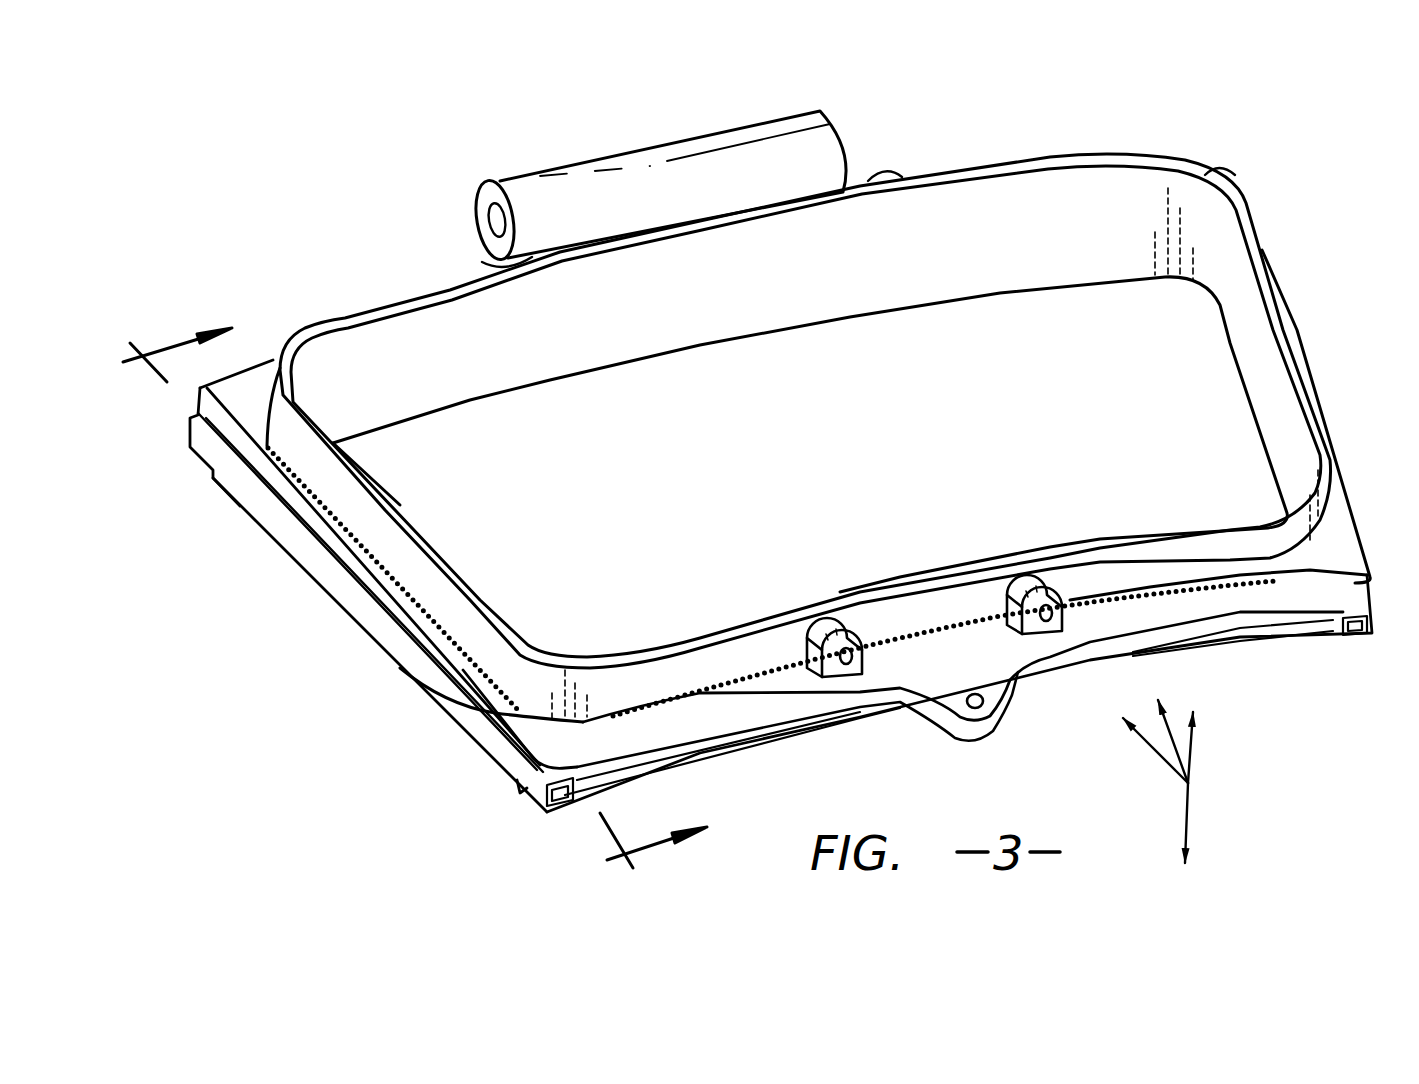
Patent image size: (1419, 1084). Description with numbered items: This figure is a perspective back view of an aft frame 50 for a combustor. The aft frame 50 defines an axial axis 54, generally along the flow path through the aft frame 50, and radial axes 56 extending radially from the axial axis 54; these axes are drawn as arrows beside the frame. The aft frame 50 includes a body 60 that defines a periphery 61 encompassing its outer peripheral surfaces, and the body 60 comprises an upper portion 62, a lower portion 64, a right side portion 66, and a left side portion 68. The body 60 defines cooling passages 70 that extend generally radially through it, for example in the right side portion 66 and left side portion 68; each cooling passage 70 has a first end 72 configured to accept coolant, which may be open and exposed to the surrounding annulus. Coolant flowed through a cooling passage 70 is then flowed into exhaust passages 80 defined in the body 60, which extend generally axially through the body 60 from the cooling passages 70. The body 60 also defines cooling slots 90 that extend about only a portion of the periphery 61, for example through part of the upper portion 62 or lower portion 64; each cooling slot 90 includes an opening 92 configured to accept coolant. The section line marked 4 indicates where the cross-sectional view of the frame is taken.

The section line 4- 4 is at (431, 582).
The aft frame 50 is at (330, 230).
The axial axis 54 is at (1193, 800).
The radial axis 56 is at (1172, 732).
The body 60 is at (228, 518).
The periphery 61 is at (298, 553).
The upper portion 62 is at (252, 386).
The lower portion 64 is at (1203, 623).
The right side portion 66 is at (357, 598).
The left side portion 68 is at (1340, 478).
The cooling passage 70 is at (540, 814).
The first end 72 is at (565, 803).
The exhaust passage 80 is at (427, 616).
The cooling slot 90 is at (720, 749).
The opening 92 is at (653, 767).